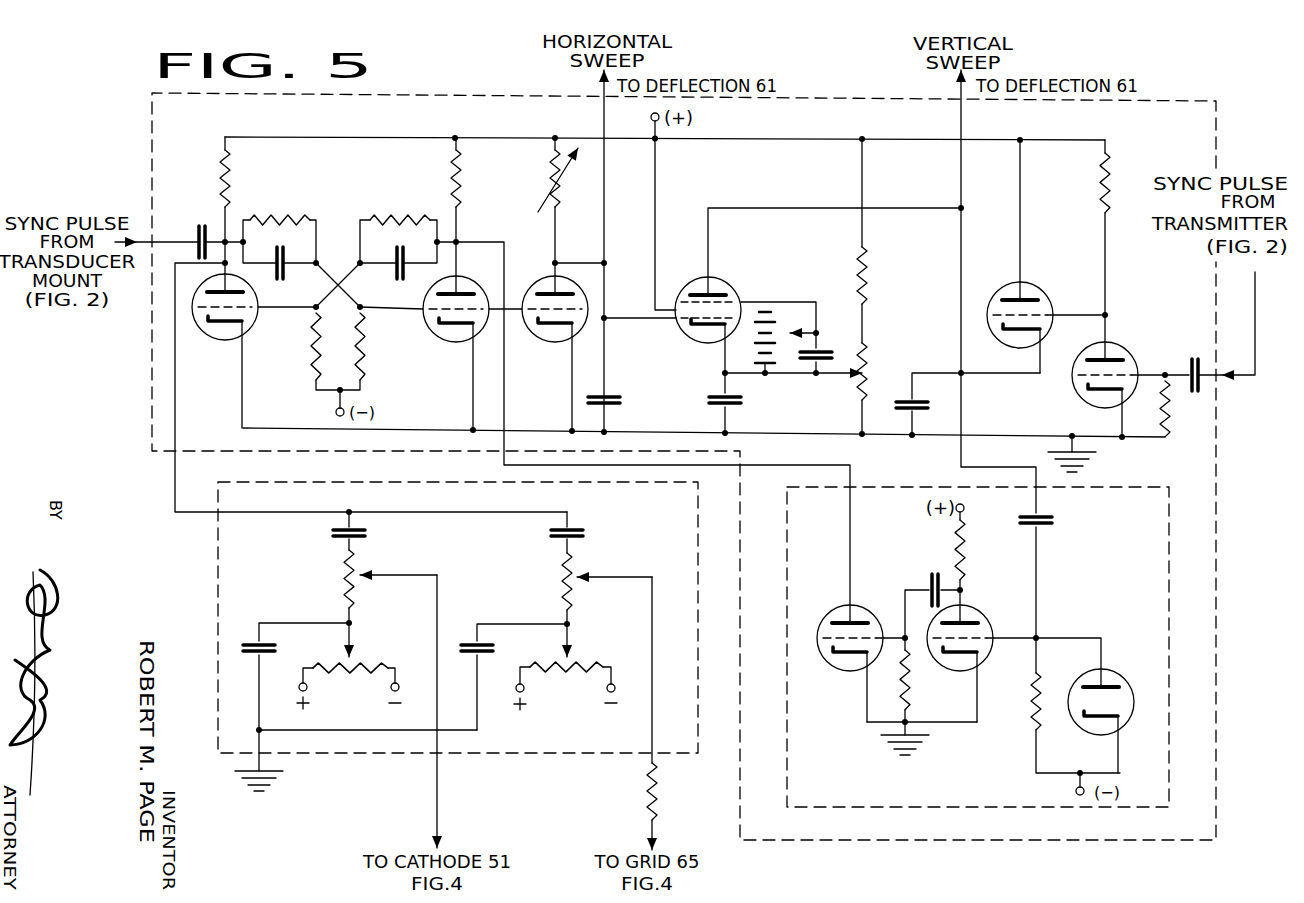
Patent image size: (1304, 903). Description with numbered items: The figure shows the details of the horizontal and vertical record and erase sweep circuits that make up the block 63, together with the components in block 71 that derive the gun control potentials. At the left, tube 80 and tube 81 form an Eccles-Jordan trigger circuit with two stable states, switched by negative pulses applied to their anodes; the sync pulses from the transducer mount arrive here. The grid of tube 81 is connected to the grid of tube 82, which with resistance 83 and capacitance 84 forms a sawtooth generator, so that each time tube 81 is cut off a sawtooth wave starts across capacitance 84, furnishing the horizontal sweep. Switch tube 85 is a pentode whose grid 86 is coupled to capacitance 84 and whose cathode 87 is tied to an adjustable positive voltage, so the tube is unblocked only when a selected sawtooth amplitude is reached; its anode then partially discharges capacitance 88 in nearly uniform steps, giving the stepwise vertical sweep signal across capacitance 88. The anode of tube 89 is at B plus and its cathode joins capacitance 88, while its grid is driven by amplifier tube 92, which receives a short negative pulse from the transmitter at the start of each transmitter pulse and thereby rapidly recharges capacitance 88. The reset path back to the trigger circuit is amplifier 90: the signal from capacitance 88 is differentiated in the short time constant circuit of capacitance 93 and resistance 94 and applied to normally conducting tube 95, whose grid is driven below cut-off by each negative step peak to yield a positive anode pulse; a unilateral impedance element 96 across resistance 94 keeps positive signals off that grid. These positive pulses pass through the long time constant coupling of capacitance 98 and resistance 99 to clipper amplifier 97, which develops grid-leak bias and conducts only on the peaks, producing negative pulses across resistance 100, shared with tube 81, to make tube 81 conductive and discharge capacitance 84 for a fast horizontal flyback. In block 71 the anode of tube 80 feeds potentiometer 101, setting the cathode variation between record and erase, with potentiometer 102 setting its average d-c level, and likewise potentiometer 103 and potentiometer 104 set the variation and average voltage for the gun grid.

The block 63 is at (1217, 600).
The block 71 is at (218, 578).
The tube 80 is at (222, 342).
The tube 81 is at (451, 343).
The tube 82 is at (553, 343).
The resistance 83 is at (552, 180).
The capacitance 84 is at (609, 402).
The switch tube 85 is at (695, 299).
The grid 86 is at (680, 326).
The cathode 87 is at (714, 341).
The capacitance 88 is at (916, 405).
The tube 89 is at (998, 299).
The amplifier 90 is at (1169, 530).
The amplifier tube 92 is at (1086, 360).
The capacitance 93 is at (1053, 520).
The resistance 94 is at (1030, 701).
The tube 95 is at (982, 617).
The unilateral impedance element 96 is at (1116, 683).
The clipper amplifier 97 is at (876, 617).
The capacitance 98 is at (935, 572).
The resistance 99 is at (912, 683).
The resistance 100 is at (454, 177).
The potentiometer 101 is at (346, 583).
The potentiometer 102 is at (361, 664).
The potentiometer 103 is at (564, 584).
The potentiometer 104 is at (581, 664).